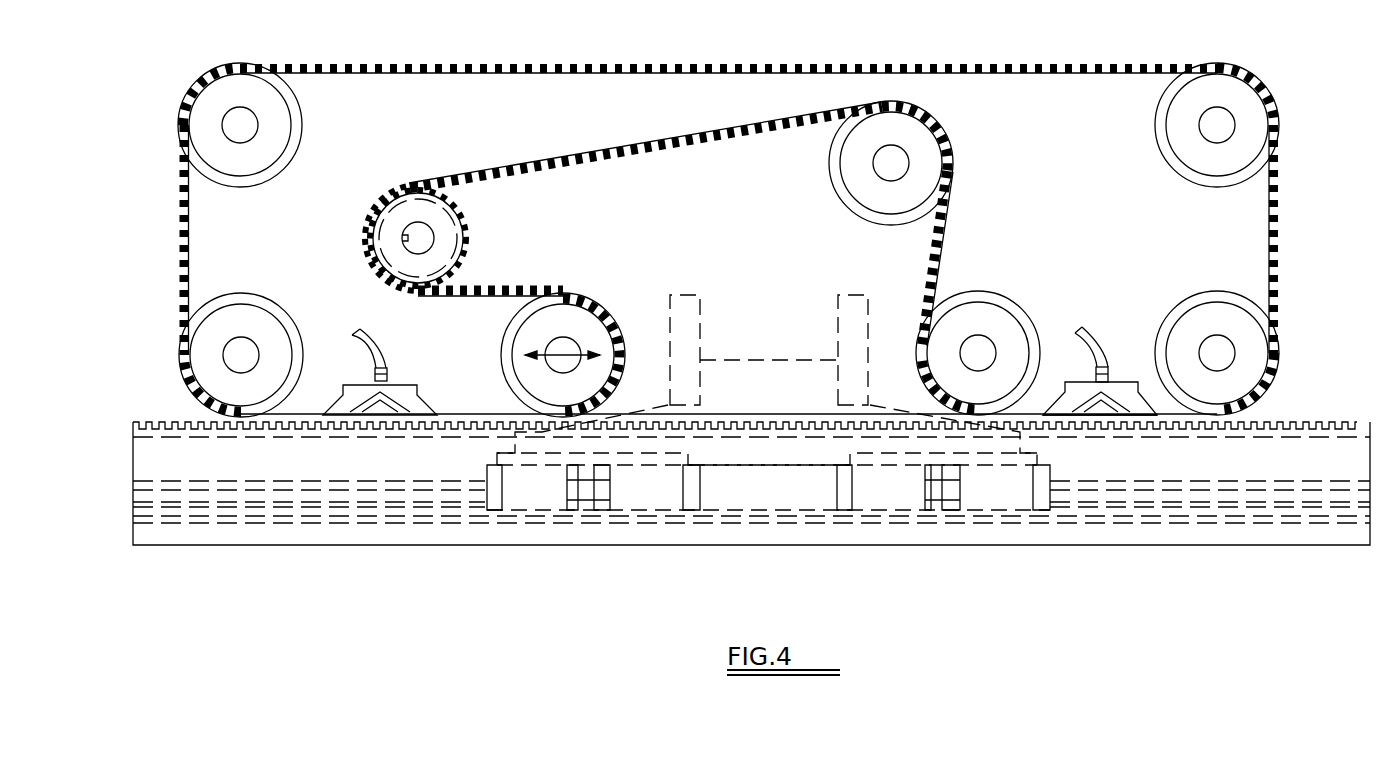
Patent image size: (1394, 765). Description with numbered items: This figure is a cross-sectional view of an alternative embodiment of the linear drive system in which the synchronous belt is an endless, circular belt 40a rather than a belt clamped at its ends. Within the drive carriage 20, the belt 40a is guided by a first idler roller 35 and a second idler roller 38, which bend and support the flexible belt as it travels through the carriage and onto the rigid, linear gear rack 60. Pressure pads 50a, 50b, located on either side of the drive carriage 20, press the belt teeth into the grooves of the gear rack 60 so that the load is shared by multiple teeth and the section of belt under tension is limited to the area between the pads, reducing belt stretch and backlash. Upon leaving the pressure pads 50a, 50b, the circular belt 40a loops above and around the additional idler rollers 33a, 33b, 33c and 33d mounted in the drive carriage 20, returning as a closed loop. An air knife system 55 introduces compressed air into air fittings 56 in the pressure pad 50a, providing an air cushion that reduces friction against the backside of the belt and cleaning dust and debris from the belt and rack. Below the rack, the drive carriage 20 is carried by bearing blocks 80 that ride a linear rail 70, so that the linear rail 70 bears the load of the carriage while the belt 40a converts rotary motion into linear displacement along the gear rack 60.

The drive carriage 20 is at (468, 214).
The additional idler roller 33a is at (272, 126).
The additional idler roller 33b is at (1243, 110).
The additional idler roller 33c is at (208, 364).
The additional idler roller 33d is at (1252, 343).
The first idler roller 35 is at (930, 150).
The second idler roller 38 is at (987, 312).
The endless circular belt 40a is at (585, 66).
The pressure pad 50a is at (1150, 391).
The pressure pad 50b is at (393, 385).
The air knife system 55 is at (1093, 332).
The air fittings 56 is at (1080, 415).
The gear rack 60 is at (773, 435).
The linear rail 70 is at (327, 497).
The bearing blocks 80 is at (868, 498).